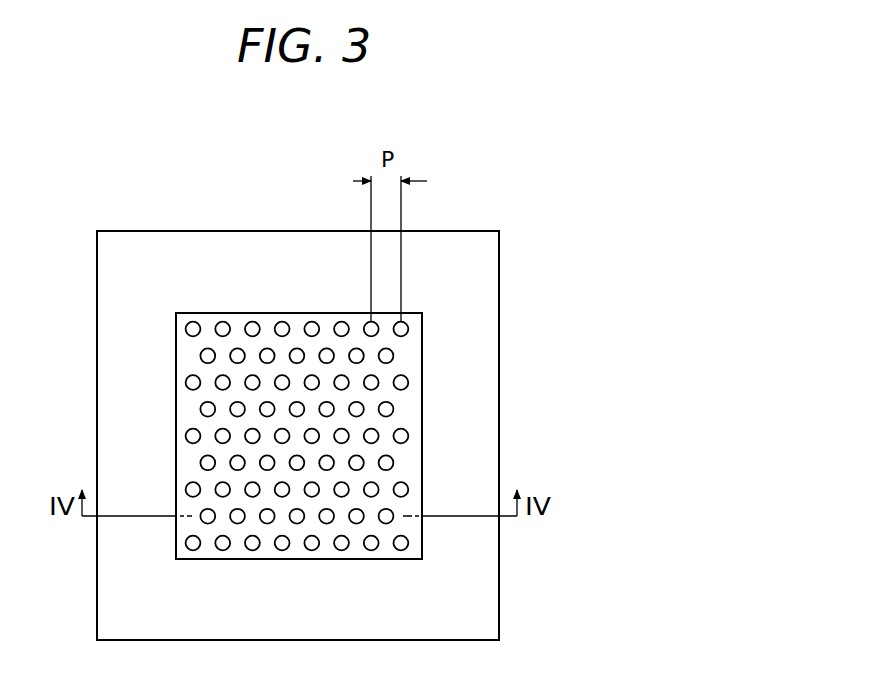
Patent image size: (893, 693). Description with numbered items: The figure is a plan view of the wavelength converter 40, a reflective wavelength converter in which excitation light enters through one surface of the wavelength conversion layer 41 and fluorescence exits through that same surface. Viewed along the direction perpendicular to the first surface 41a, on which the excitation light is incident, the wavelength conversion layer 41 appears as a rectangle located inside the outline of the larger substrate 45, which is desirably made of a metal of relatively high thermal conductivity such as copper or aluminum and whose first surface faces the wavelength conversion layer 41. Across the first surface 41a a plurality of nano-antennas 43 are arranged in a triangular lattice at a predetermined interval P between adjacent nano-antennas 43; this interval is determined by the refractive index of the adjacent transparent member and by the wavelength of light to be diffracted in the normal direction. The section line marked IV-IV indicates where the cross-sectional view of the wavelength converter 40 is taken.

The wavelength converter 40 is at (229, 224).
The wavelength conversion layer 41 is at (425, 348).
The first surface 41a is at (412, 408).
The nano-antennas 43 is at (186, 331).
The substrate 45 is at (115, 605).